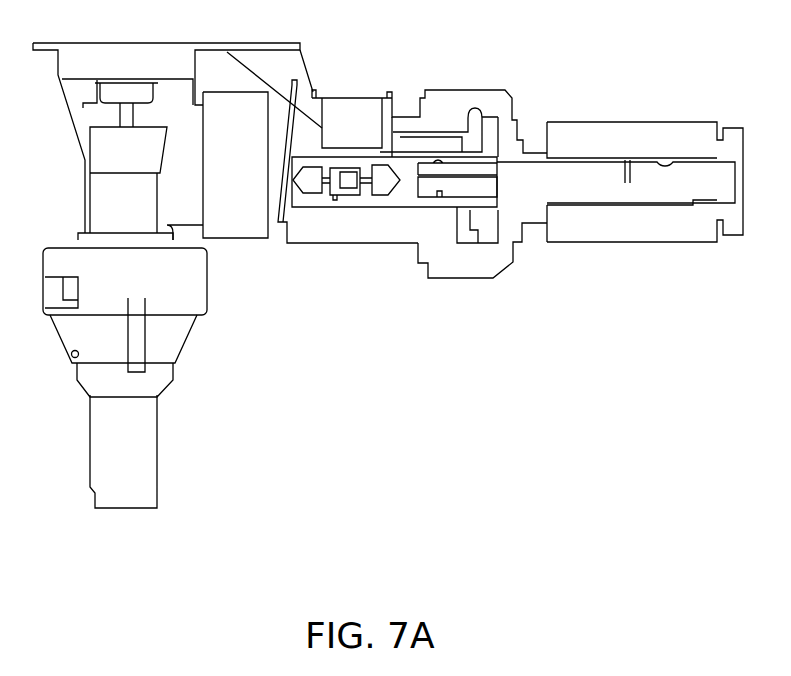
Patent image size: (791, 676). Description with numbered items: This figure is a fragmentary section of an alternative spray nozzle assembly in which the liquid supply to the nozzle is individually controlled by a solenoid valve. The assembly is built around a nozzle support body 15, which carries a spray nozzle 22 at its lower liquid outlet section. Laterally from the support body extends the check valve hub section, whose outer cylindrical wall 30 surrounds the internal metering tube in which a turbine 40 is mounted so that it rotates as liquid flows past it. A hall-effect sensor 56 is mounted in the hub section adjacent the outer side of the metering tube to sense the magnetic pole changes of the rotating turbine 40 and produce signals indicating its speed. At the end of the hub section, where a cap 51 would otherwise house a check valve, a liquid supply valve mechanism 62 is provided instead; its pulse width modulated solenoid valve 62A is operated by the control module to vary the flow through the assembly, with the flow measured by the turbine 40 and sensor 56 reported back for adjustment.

The nozzle support body 15 is at (83, 152).
The spray nozzle 22 is at (58, 330).
The outer cylindrical wall 30 is at (278, 228).
The turbine 40 is at (347, 167).
The cap 51 is at (473, 88).
The hall-effect sensor 56 is at (338, 120).
The liquid supply valve mechanism 62 is at (688, 120).
The pulse width modulated solenoid valve 62A is at (600, 175).